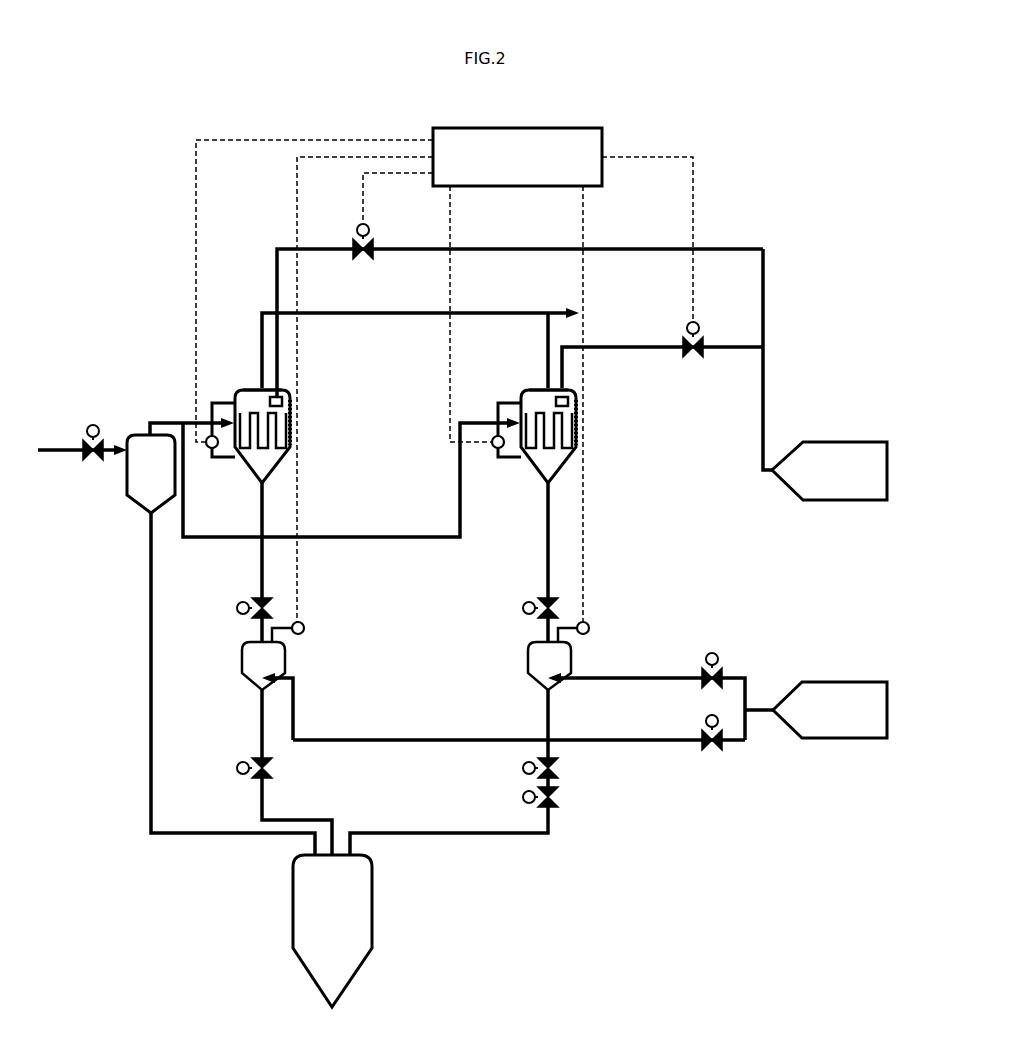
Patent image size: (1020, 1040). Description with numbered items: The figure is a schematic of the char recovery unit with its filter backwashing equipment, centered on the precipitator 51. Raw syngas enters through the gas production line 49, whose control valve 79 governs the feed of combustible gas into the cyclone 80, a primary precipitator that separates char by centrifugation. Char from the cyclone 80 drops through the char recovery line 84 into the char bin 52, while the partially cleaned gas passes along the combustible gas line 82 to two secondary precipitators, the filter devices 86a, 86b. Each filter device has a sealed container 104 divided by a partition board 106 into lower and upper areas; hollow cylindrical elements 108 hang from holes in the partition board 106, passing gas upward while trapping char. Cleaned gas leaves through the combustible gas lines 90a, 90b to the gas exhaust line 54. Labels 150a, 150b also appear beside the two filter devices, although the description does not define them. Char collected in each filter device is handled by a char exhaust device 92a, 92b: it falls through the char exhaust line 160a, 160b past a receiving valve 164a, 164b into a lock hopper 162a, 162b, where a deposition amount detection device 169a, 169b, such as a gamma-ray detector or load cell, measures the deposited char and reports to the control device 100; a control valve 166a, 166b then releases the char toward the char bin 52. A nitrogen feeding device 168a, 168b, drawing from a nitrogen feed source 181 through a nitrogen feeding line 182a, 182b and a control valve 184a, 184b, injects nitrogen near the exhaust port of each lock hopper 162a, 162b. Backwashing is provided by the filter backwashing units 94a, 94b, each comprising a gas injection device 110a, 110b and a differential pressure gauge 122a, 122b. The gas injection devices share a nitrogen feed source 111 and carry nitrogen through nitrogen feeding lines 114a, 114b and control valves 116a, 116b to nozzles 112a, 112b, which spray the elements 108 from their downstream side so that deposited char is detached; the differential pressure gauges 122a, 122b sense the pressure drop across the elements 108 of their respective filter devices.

The control device 100 is at (546, 128).
The precipitator 51 is at (178, 226).
The filter backwashing unit 94a is at (218, 277).
The filter backwashing unit 94b is at (850, 324).
The gas injection device 110a is at (268, 236).
The gas injection device 110b is at (778, 367).
The nitrogen feeding line 114a is at (718, 249).
The nitrogen feeding line 114b is at (746, 346).
The control valve 116a is at (366, 224).
The control valve 116b is at (688, 326).
The combustible gas line 90a is at (326, 312).
The combustible gas line 90b is at (546, 318).
The gas exhaust line 54 is at (566, 311).
The first reactor 150a is at (392, 457).
The second reactor 150b is at (752, 551).
The element 108 is at (291, 446).
The filter device 86a is at (290, 392).
The filter device 86b is at (576, 392).
The container 104 is at (238, 392).
The partition board 106 is at (247, 412).
The nozzle 112a is at (284, 400).
The nozzle 112b is at (570, 400).
The differential pressure gauge 122a is at (212, 450).
The differential pressure gauge 122b is at (498, 450).
The gas production line 49 is at (55, 447).
The control valve 79 is at (93, 425).
The cyclone 80 is at (127, 478).
The combustible gas line 82 is at (163, 423).
The char recovery line 84 is at (148, 718).
The char exhaust line 160a is at (268, 548).
The char exhaust line 160b is at (546, 544).
The char exhaust device 92a is at (236, 634).
The char exhaust device 92b is at (525, 632).
The receiving valve 164a is at (274, 610).
The receiving valve 164b is at (560, 606).
The deposition amount detection device 169a is at (305, 633).
The deposition amount detection device 169b is at (590, 628).
The lock hopper 162a is at (285, 665).
The lock hopper 162b is at (572, 660).
The control valve 166a is at (273, 776).
The control valve 166b is at (565, 800).
The nitrogen feeding line 182a is at (389, 740).
The nitrogen feeding line 182b is at (577, 680).
The control valve 184a is at (722, 748).
The control valve 184b is at (722, 672).
The nitrogen feeding device 168a is at (462, 692).
The nitrogen feeding device 168b is at (768, 602).
The nitrogen feed source 111 is at (833, 442).
The nitrogen feed source 181 is at (832, 682).
The char bin 52 is at (293, 895).